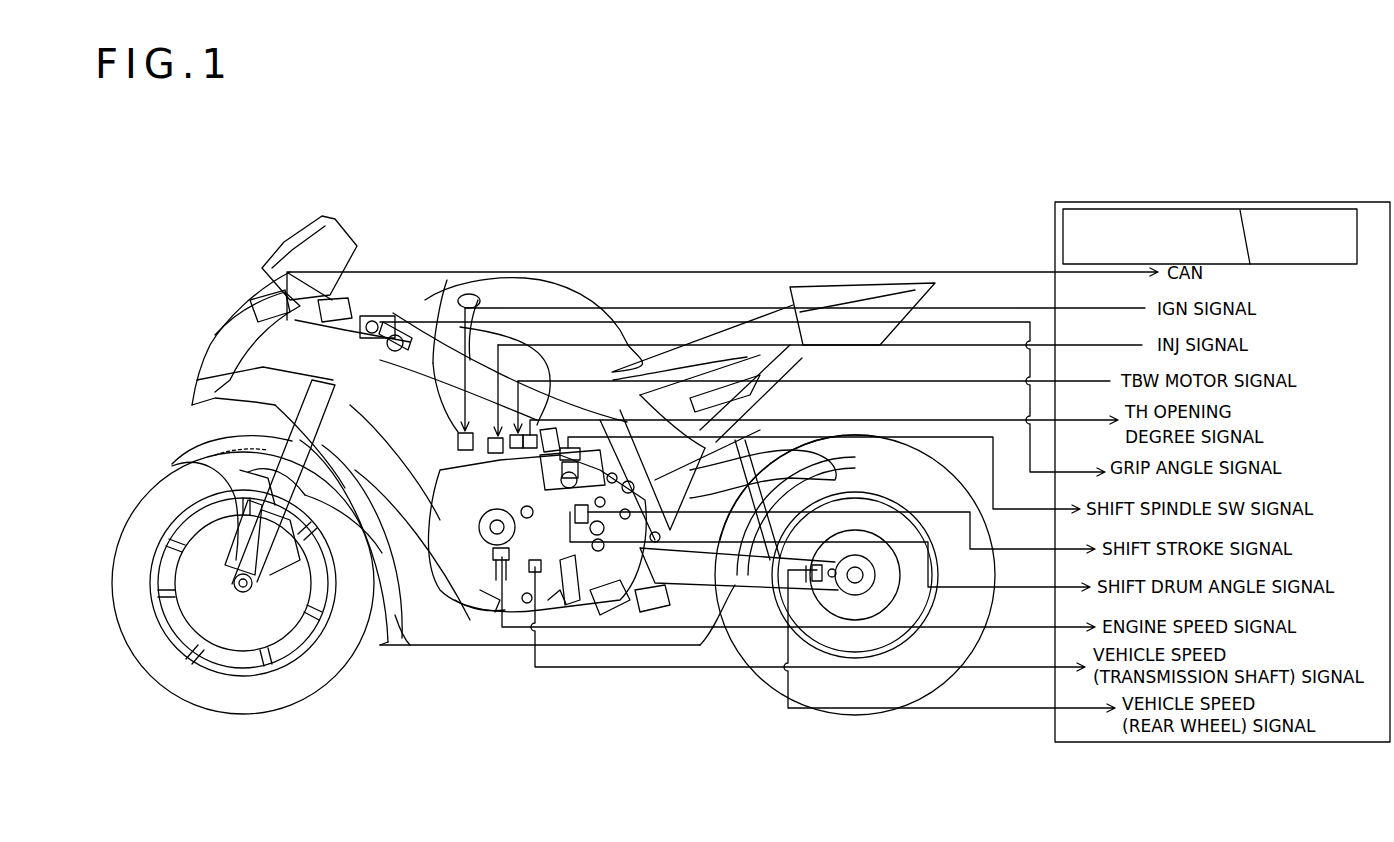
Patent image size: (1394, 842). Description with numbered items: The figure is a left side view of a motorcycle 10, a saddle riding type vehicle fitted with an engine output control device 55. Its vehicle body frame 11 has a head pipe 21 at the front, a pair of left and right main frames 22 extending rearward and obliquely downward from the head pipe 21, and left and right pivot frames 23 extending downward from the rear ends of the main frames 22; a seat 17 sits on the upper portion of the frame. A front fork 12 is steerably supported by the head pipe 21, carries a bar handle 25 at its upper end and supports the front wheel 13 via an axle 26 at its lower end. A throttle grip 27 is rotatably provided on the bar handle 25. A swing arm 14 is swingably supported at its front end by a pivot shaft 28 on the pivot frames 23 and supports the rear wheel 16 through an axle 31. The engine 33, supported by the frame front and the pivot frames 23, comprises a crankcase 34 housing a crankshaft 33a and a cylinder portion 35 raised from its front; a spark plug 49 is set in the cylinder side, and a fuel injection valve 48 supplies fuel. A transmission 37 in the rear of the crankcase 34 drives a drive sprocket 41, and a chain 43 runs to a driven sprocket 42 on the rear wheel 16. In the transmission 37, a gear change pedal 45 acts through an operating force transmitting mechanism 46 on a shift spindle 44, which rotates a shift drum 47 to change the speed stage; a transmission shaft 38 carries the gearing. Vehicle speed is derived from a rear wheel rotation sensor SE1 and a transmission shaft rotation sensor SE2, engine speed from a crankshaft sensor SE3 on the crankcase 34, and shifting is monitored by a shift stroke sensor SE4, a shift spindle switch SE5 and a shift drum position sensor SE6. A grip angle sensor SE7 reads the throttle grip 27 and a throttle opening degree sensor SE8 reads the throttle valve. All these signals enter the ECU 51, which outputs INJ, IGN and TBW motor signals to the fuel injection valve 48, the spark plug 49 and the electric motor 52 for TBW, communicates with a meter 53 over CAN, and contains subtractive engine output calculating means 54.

The motorcycle 10 is at (158, 241).
The vehicle body frame 11 is at (465, 294).
The front fork 12 is at (230, 452).
The front wheel 13 is at (165, 675).
The swing arm 14 is at (765, 560).
The rear wheel 16 is at (928, 680).
The seat 17 is at (690, 400).
The head pipe 21 is at (380, 408).
The main frames 22 is at (498, 345).
The pivot frames 23 is at (652, 612).
The bar handle 25 is at (395, 320).
The axle 26 is at (243, 592).
The throttle grip 27 is at (333, 380).
The pivot shaft 28 is at (604, 620).
The axle 31 is at (857, 585).
The engine 33 is at (498, 605).
The crankshaft 33a is at (460, 605).
The crankcase 34 is at (432, 590).
The cylinder portion 35 is at (395, 615).
The transmission 37 is at (553, 606).
The transmission shaft 38 is at (527, 604).
The drive sprocket 41 is at (568, 608).
The driven sprocket 42 is at (823, 582).
The chain 43 is at (740, 590).
The shift spindle 44 is at (571, 472).
The gear change pedal 45 is at (601, 552).
The operating force transmitting mechanism 46 is at (582, 526).
The shift drum 47 is at (549, 428).
The fuel injection valve 48 is at (478, 300).
The spark plug 49 is at (453, 336).
The electronic control unit (ECU) 51 is at (1157, 202).
The electric motor for TBW 52 is at (518, 381).
The meter 53 is at (268, 298).
The subtractive engine output calculating means 54 is at (1245, 209).
The engine output control device 55 is at (1196, 190).
The rear wheel rotation sensor SE1 is at (815, 580).
The transmission shaft rotation sensor SE2 is at (535, 574).
The crankshaft sensor SE3 is at (498, 562).
The shift stroke sensor SE4 is at (657, 532).
The shift spindle switch SE5 is at (601, 498).
The shift drum position sensor SE6 is at (627, 509).
The grip angle sensor SE7 is at (372, 312).
The throttle opening degree sensor SE8 is at (568, 447).